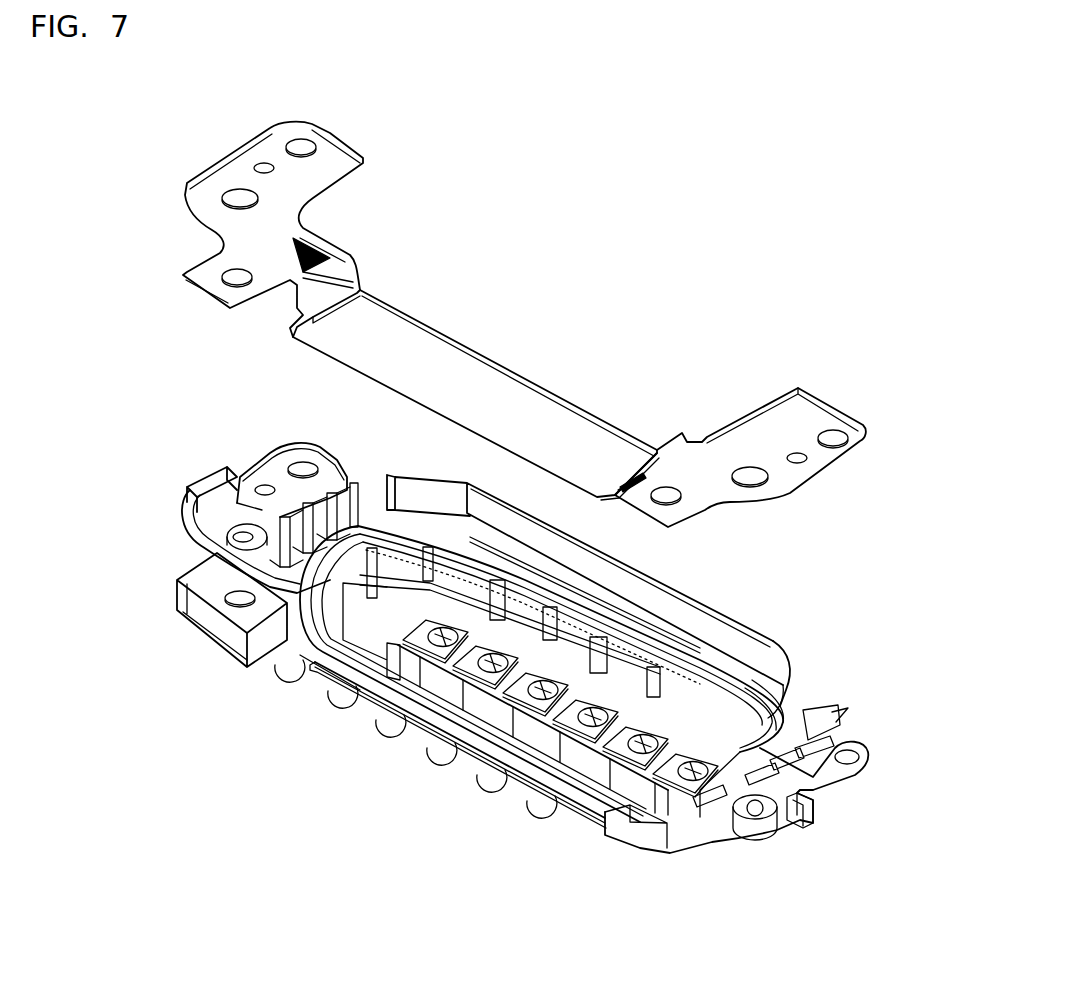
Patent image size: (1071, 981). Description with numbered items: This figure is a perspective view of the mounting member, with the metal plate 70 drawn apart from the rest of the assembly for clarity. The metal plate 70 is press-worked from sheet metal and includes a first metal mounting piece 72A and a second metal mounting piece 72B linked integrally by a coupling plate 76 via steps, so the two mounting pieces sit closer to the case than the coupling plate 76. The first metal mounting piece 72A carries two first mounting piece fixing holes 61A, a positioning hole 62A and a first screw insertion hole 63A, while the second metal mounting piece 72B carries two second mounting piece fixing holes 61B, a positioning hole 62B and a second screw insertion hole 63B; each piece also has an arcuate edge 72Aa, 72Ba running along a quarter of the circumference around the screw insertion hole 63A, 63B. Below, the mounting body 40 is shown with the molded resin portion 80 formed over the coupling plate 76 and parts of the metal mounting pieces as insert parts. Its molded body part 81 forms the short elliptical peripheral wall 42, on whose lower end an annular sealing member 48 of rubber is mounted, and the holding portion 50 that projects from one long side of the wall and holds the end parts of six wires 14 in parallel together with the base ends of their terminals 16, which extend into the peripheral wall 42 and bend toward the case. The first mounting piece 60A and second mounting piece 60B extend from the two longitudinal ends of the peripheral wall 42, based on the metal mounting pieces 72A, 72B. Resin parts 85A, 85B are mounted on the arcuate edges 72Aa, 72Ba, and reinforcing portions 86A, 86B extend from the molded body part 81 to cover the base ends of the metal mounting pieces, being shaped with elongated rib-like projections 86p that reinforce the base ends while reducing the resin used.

The wire-like body 14 is at (345, 706).
The terminal 16 is at (622, 775).
The mounting body 40 is at (595, 645).
The peripheral wall 42 is at (773, 647).
The annular sealing member 48 is at (780, 712).
The holding portion 50 is at (308, 688).
The first mounting piece 60A is at (767, 797).
The second mounting piece 60B is at (257, 514).
The first mounting piece fixing hole 61A is at (865, 425).
The second mounting piece fixing hole 61B is at (313, 147).
The positioning hole 62A is at (800, 462).
The positioning hole 62B is at (258, 165).
The first screw insertion hole 63A is at (757, 822).
The second screw insertion hole 63B is at (203, 560).
The metal plate 70 is at (491, 337).
The first metal mounting piece 72A is at (827, 473).
The arcuate edge 72Aa is at (748, 500).
The second metal mounting piece 72B is at (187, 182).
The arcuate edge 72Ba is at (178, 203).
The coupling plate 76 is at (550, 393).
The molded resin portion 80 is at (363, 697).
The molded body part 81 is at (475, 755).
The part mounted on periphery of first metal mounting piece 85A is at (810, 813).
The part mounted on periphery of second metal mounting piece 85B is at (177, 507).
The reinforcing portion 86A is at (800, 712).
The reinforcing portion 86B is at (358, 500).
The projection 86p is at (352, 530).